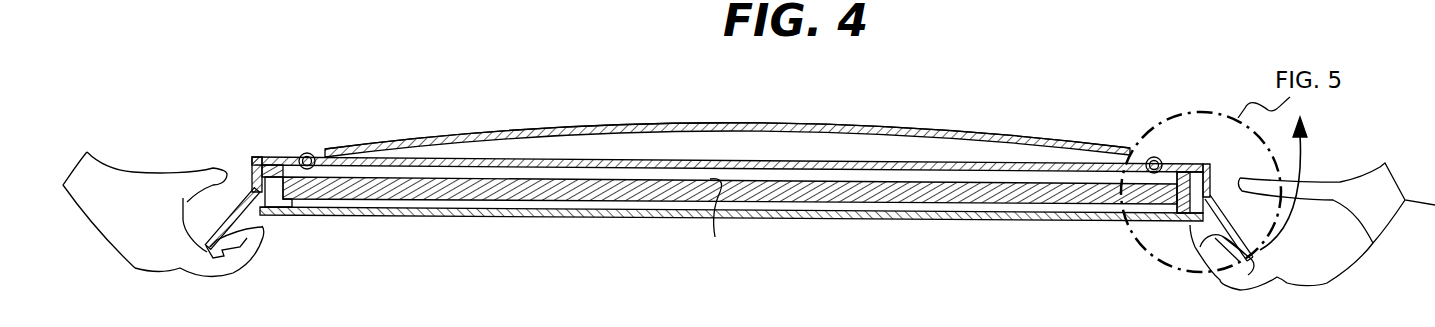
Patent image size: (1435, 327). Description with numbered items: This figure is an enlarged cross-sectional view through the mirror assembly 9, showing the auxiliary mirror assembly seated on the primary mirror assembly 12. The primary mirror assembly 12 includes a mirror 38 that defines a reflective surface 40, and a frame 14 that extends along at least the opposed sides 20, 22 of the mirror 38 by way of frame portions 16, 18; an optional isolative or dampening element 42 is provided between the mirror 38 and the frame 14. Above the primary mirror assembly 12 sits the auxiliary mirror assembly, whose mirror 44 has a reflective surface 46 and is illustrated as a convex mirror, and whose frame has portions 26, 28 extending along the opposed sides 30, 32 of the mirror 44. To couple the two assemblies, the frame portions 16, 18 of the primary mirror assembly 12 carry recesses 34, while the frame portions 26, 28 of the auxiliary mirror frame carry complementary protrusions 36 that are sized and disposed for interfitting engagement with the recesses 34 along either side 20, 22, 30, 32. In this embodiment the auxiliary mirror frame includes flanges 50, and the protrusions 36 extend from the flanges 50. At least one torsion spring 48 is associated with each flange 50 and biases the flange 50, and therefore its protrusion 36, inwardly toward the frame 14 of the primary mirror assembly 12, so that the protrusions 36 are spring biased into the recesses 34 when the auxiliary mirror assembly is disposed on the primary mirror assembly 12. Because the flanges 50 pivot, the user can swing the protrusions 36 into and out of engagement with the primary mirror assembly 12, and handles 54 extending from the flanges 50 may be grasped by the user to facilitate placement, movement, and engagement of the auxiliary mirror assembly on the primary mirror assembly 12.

The mirror assembly 9 is at (392, 264).
The primary mirror assembly 12 is at (1030, 230).
The frame 14 is at (862, 220).
The frame portion 16 is at (1198, 166).
The frame portion 18 is at (265, 213).
The opposed side 20 is at (1187, 214).
The opposed side 22 is at (276, 157).
The frame portion 26 is at (1213, 168).
The frame portion 28 is at (284, 172).
The opposed side 30 is at (1146, 158).
The opposed side 32 is at (323, 151).
The recess 34 is at (260, 187).
The protrusion 36 is at (1210, 197).
The mirror 38 is at (978, 186).
The reflective surface 40 is at (716, 222).
The dampening element 42 is at (316, 207).
The mirror 44 is at (802, 125).
The reflective surface 46 is at (687, 122).
The torsion spring 48 is at (1156, 156).
The flange 50 is at (248, 157).
The handle 54 is at (210, 258).